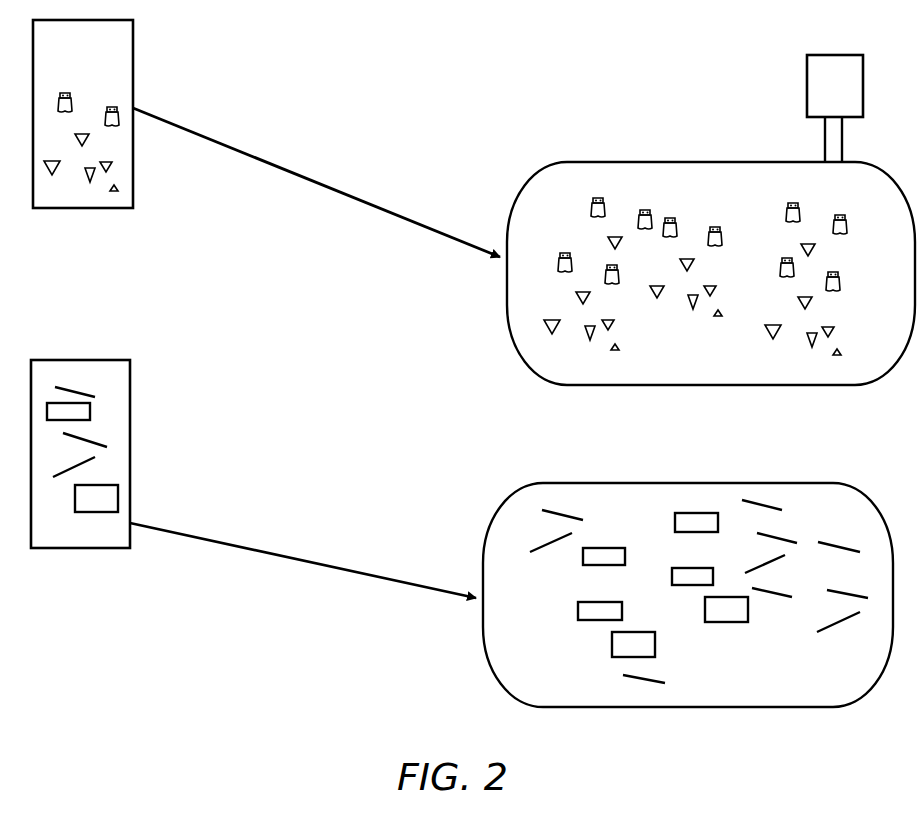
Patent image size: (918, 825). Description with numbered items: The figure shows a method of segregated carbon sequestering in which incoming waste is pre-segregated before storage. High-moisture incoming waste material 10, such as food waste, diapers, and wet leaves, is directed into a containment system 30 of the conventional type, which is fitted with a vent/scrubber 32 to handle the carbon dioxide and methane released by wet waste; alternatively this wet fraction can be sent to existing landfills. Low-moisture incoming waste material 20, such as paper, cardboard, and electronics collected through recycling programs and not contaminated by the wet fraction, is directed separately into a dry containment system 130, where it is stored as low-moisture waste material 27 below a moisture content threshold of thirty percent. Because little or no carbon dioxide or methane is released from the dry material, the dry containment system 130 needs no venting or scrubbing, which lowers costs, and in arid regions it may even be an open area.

The high-moisture incoming waste material 10 is at (52, 210).
The low-moisture incoming waste material 20 is at (50, 550).
The low-moisture waste material 27 is at (697, 591).
The containment system 30 is at (773, 385).
The vent/scrubber 32 is at (807, 80).
The dry containment system 130 is at (688, 634).